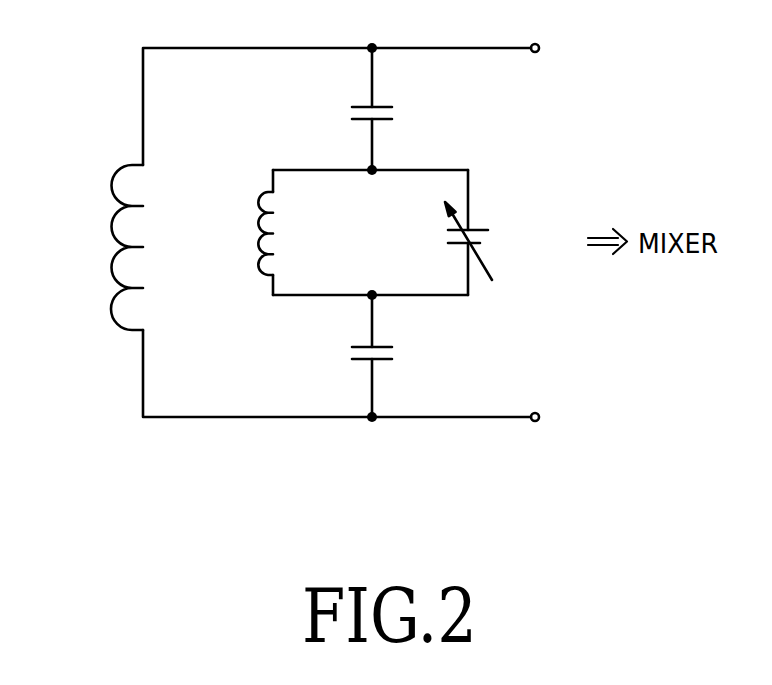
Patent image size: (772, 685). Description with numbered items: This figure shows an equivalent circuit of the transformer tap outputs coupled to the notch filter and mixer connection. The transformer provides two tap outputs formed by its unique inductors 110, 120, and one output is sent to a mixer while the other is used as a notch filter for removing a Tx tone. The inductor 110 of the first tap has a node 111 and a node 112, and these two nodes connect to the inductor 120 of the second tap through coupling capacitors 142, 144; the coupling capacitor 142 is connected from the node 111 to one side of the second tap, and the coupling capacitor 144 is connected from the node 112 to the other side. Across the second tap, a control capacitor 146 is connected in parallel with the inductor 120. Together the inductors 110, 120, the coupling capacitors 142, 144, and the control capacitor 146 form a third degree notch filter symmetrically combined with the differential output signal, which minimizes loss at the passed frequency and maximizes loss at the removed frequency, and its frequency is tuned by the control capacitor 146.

The inductor of the transformer 110 is at (130, 331).
The node of the first tap 111 is at (540, 50).
The node of the first tap 112 is at (540, 419).
The inductor of the transformer 120 is at (270, 276).
The coupling capacitor 142 is at (390, 112).
The coupling capacitor 144 is at (392, 352).
The control capacitor 146 is at (480, 243).